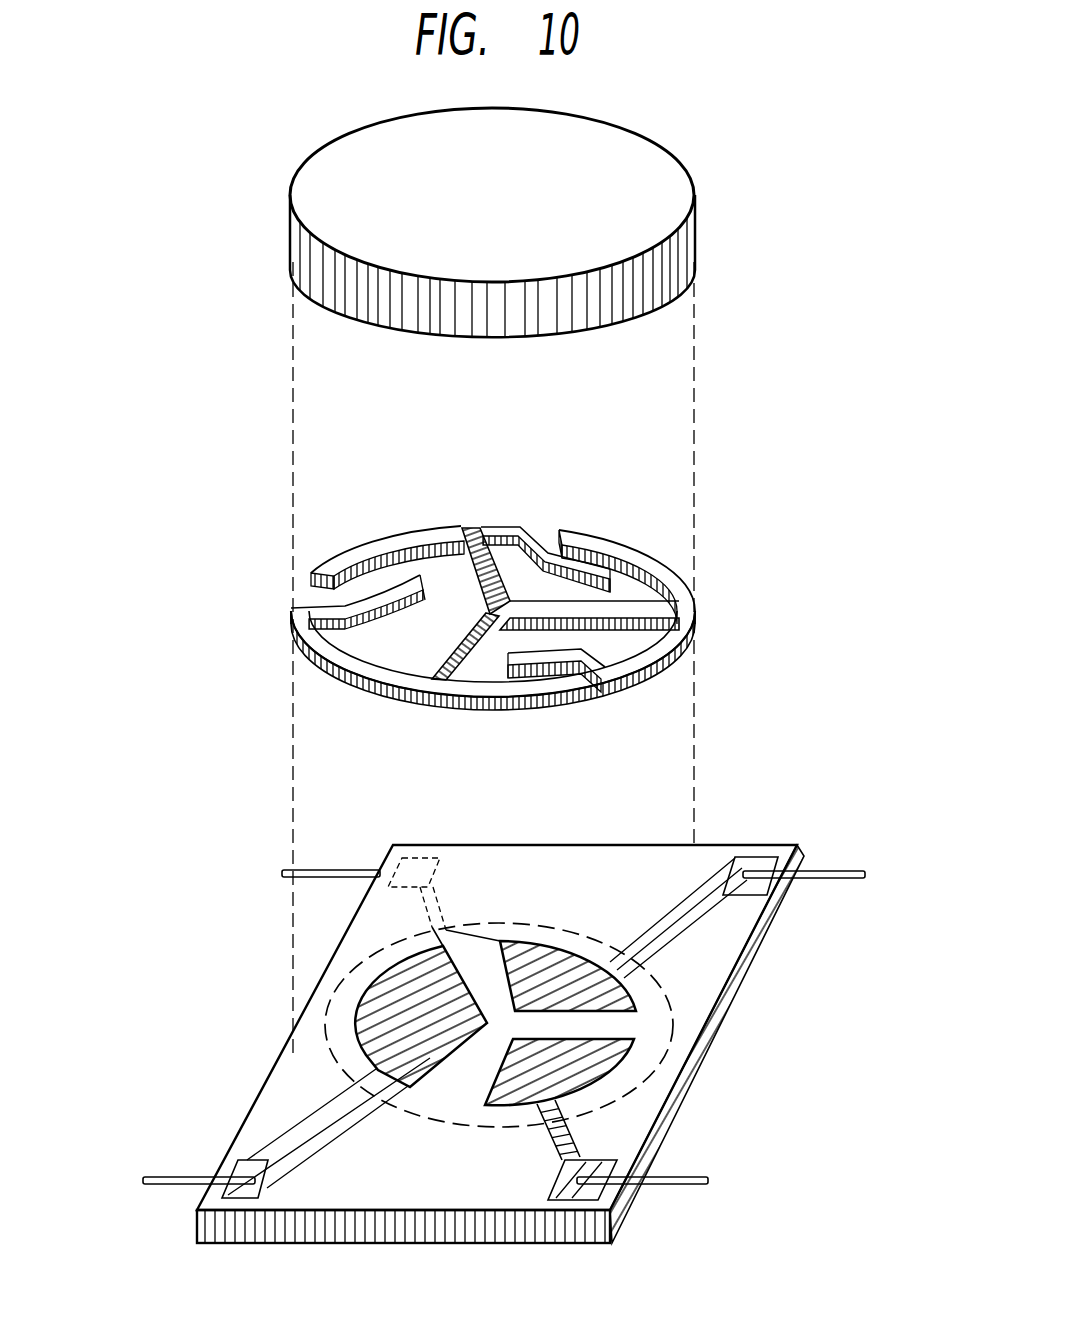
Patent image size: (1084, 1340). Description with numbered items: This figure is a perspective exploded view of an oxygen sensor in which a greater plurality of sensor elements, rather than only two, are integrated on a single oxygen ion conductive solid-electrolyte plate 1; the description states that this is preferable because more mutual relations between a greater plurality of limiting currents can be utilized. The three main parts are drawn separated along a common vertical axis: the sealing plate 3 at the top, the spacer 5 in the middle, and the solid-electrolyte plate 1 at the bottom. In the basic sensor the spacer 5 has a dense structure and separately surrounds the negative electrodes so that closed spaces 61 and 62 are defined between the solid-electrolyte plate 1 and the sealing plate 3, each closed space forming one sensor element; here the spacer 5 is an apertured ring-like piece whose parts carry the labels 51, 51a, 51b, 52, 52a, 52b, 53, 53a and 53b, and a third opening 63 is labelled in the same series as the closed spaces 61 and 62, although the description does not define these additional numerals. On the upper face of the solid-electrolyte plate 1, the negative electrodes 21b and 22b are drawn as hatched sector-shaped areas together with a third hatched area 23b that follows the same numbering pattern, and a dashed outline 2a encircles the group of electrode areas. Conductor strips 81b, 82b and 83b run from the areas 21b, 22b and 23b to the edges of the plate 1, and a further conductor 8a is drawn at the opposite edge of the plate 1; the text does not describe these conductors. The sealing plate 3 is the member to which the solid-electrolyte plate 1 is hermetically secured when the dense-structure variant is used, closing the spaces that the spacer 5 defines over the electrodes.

The oxygen ion conductive solid-electrolyte plate 1 is at (520, 1233).
The electrode region outline 2a is at (420, 1114).
The sealing plate 3 is at (683, 243).
The spacer 5 is at (300, 640).
The first electrode segment 51 is at (385, 572).
The first electrode arc portion 51a is at (420, 563).
The first electrode arm 51b is at (318, 592).
The second electrode segment 52 is at (612, 565).
The second electrode arc portion 52a is at (625, 578).
The second electrode arm 52b is at (540, 525).
The third electrode segment 53 is at (530, 690).
The third electrode arc portion 53a is at (505, 683).
The third electrode arm 53b is at (578, 702).
The closed space 61 is at (397, 648).
The closed space 62 is at (532, 587).
The third window 63 is at (600, 642).
The common lead 8a is at (283, 871).
The negative electrode 21b is at (373, 1021).
The negative electrode 22b is at (580, 963).
The third lower electrode 23b is at (617, 1060).
The first lead 81b is at (158, 1176).
The second lead 82b is at (862, 871).
The third lead 83b is at (700, 1178).